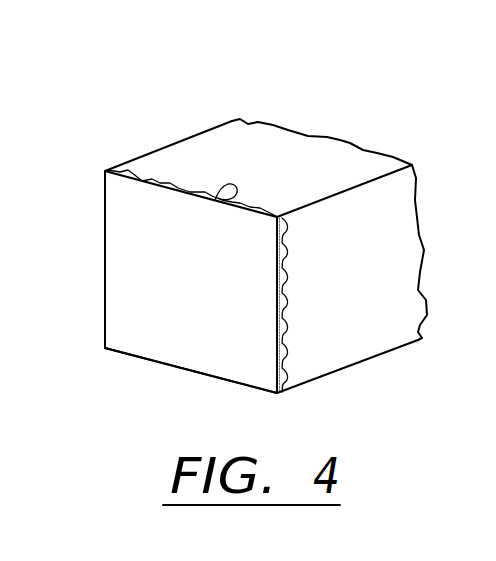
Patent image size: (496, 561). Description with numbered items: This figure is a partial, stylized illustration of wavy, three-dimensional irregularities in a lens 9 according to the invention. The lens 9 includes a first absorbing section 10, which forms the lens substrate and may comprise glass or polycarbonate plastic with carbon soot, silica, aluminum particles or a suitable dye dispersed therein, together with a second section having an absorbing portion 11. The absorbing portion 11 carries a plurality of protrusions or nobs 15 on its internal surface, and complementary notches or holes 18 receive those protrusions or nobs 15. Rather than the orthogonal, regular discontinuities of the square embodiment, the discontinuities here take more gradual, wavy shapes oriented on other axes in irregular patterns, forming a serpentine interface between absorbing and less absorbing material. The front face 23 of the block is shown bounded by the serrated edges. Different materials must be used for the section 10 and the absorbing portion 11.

The lens 9 is at (337, 138).
The first absorbing section 10 is at (367, 362).
The absorbing portion 11 is at (282, 395).
The protrusions or nobs 15 is at (187, 188).
The notches or holes 18 is at (218, 198).
The front face of the block 23 is at (220, 357).